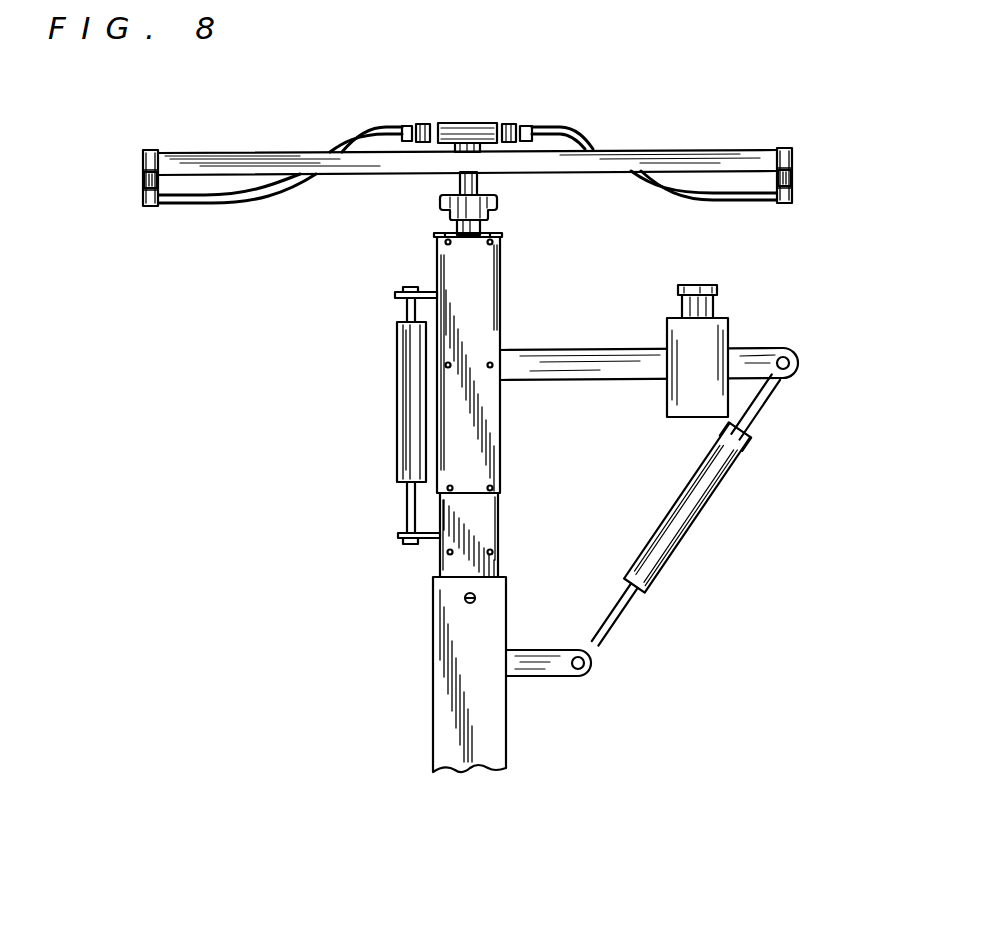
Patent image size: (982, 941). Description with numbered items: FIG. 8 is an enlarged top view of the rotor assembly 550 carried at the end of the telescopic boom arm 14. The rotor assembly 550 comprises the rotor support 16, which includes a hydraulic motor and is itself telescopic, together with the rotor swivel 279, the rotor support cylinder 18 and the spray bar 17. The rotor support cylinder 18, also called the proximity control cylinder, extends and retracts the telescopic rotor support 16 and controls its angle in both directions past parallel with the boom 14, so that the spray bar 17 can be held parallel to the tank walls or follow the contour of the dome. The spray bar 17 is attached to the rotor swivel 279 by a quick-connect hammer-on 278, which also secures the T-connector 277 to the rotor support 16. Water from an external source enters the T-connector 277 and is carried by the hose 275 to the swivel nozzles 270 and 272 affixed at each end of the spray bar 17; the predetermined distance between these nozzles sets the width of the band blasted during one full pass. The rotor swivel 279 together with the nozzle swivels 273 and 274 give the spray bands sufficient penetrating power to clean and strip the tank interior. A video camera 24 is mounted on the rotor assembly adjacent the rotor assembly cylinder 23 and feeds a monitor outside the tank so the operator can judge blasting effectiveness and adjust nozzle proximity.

The telescopic boom arm 14 is at (507, 740).
The rotor support 16 is at (500, 420).
The spray bar 17 is at (401, 175).
The rotor support cylinder 18 is at (397, 392).
The rotor assembly cylinder 23 is at (700, 508).
The video camera 24 is at (729, 330).
The swivel nozzle 270 is at (157, 151).
The swivel nozzle 272 is at (788, 149).
The nozzle swivel 273 is at (143, 178).
The nozzle swivel 274 is at (792, 176).
The hose 275 is at (236, 202).
The T-connector 277 is at (473, 123).
The hammer-on 278 is at (497, 208).
The rotor swivel 279 is at (478, 187).
The rotor assembly 550 is at (362, 468).